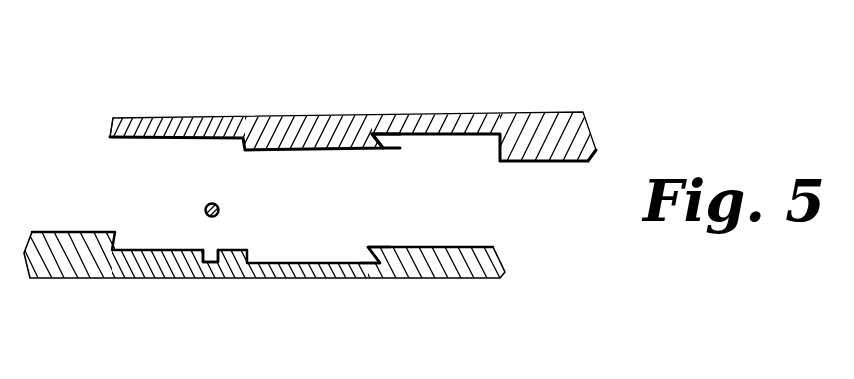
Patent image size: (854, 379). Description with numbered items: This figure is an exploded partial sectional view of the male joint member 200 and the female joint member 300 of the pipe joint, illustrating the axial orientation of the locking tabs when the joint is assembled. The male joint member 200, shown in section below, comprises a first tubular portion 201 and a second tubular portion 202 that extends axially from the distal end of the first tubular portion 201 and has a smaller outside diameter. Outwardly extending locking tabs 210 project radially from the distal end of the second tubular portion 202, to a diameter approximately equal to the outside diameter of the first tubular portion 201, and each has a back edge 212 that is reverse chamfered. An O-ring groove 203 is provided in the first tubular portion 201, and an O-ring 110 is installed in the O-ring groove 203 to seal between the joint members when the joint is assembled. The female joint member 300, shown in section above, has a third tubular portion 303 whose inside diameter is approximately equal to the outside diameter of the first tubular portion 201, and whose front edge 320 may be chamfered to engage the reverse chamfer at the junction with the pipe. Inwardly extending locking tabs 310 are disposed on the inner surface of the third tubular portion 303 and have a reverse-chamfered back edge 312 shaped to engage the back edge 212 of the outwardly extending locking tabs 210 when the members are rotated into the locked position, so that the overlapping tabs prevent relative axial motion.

The female joint member 300 is at (502, 77).
The front edge 320 is at (110, 129).
The third tubular portion 303 is at (194, 137).
The inwardly extending locking tabs 310 is at (310, 149).
The back edge 312 is at (387, 141).
The O-ring 110 is at (218, 204).
The male joint member 200 is at (505, 295).
The first tubular portion 201 is at (160, 249).
The O-ring groove 203 is at (213, 256).
The second tubular portion 202 is at (300, 262).
The back edge 212 is at (370, 255).
The outwardly extending locking tabs 210 is at (457, 257).